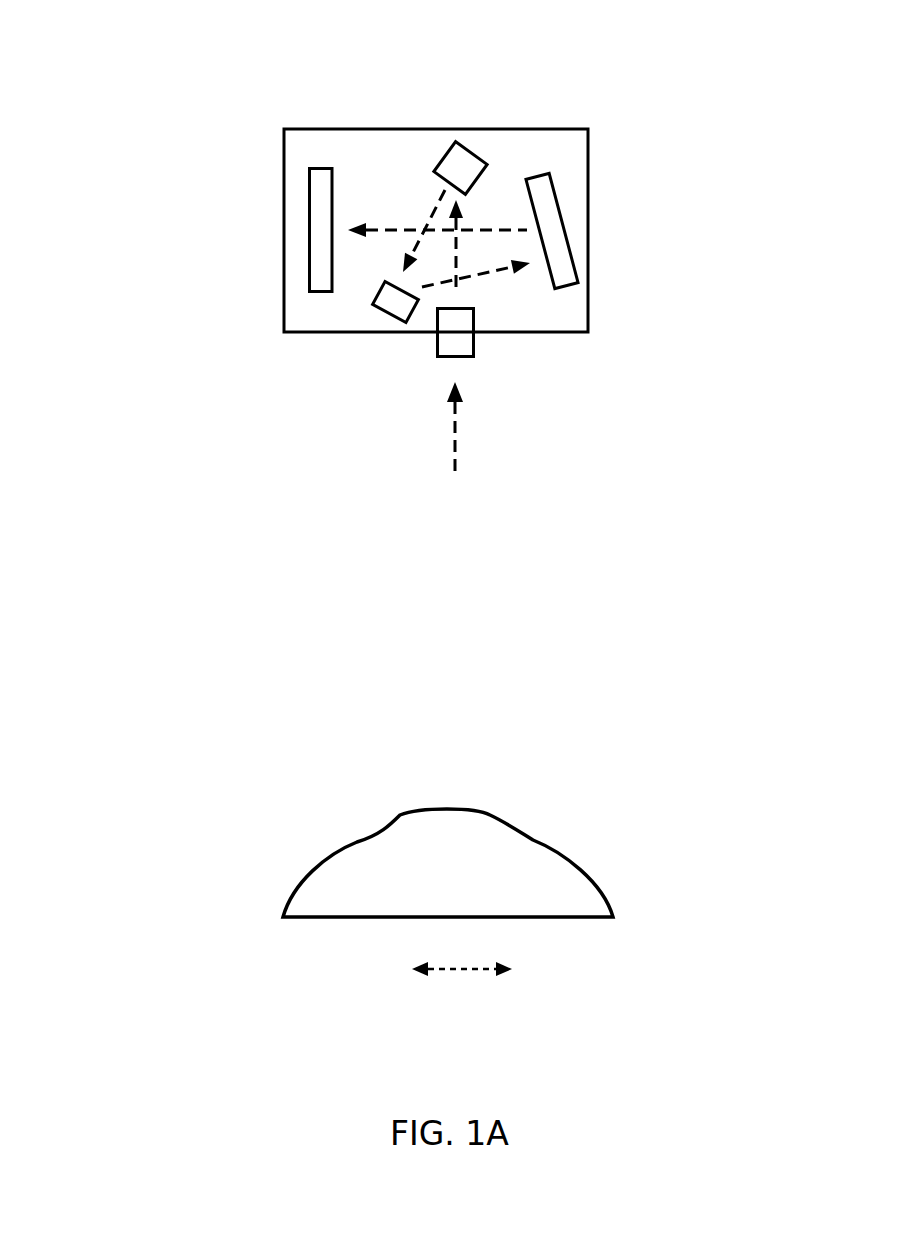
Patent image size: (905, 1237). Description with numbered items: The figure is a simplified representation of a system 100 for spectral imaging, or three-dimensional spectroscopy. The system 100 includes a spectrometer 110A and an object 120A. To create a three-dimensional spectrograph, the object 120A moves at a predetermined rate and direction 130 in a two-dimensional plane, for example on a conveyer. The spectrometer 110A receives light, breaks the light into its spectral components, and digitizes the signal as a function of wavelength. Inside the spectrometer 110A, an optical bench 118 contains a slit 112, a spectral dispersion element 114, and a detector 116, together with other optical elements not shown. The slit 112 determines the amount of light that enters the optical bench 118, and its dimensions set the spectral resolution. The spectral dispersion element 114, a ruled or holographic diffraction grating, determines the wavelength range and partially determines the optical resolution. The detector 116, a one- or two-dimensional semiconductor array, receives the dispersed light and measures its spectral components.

The system 100 is at (133, 38).
The spectrometer 110A is at (588, 128).
The slit 112 is at (475, 357).
The spectral dispersion element 114 is at (393, 323).
The detector 116 is at (308, 233).
The optical bench 118 is at (414, 204).
The object 120A is at (385, 822).
The direction 130 is at (460, 972).